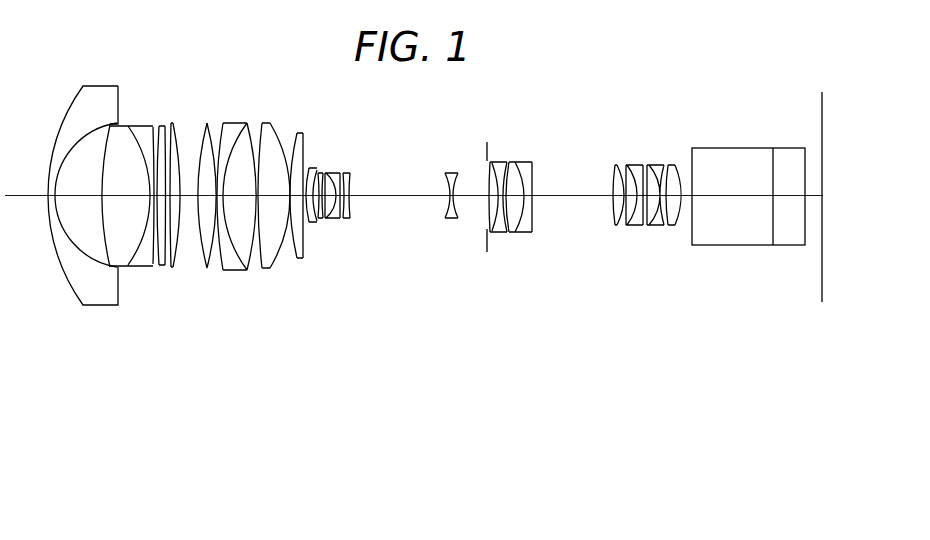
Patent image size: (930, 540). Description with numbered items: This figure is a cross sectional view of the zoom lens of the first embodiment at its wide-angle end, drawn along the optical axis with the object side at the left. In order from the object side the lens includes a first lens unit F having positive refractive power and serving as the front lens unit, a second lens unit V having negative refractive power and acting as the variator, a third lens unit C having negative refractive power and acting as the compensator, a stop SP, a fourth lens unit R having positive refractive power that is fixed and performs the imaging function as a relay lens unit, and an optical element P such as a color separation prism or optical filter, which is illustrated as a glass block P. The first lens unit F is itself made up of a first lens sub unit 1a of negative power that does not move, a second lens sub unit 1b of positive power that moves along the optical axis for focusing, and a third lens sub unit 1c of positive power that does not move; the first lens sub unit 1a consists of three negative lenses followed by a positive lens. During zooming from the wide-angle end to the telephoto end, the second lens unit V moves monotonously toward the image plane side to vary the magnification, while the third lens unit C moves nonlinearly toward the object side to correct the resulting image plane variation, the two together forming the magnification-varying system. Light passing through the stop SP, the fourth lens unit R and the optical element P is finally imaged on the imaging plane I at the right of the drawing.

The first lens sub unit 1a is at (57, 370).
The second lens sub unit 1b is at (176, 288).
The third lens sub unit 1c is at (250, 269).
The first lens unit F is at (178, 291).
The second lens unit V is at (308, 285).
The third lens unit C is at (454, 287).
The stop SP is at (494, 324).
The fourth lens unit R is at (501, 319).
The optical element P is at (687, 319).
The imaging plane I is at (808, 359).